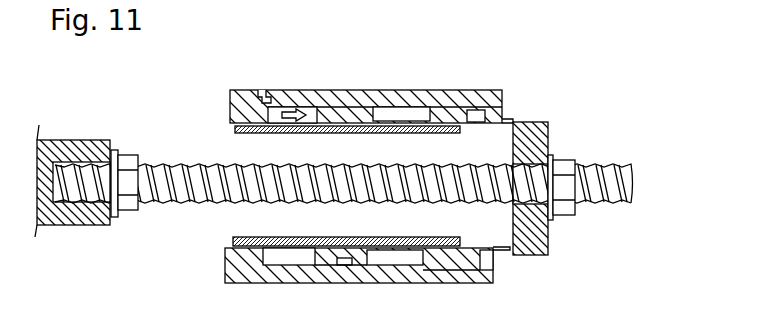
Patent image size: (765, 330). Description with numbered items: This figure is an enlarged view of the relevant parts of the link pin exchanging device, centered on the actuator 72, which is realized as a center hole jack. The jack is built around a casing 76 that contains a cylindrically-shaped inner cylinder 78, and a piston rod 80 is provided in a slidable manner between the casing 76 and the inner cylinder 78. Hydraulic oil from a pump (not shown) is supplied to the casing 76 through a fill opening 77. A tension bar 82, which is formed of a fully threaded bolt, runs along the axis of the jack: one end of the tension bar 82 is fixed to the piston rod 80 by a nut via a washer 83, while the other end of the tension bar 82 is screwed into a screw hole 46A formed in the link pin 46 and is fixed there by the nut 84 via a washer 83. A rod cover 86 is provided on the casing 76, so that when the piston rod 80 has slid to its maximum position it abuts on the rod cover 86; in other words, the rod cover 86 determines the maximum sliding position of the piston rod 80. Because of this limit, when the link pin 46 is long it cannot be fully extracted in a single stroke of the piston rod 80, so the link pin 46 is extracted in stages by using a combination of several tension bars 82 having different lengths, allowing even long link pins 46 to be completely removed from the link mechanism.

The actuator 72 is at (578, 91).
The link pin 46 is at (71, 226).
The screw hole 46A is at (95, 168).
The casing 76 is at (330, 90).
The fill opening 77 is at (268, 92).
The inner cylinder 78 is at (240, 132).
The piston rod 80 is at (527, 120).
The tension bar 82 is at (178, 203).
The washer 83 is at (113, 218).
The nut 84 is at (127, 212).
The rod cover 86 is at (504, 117).